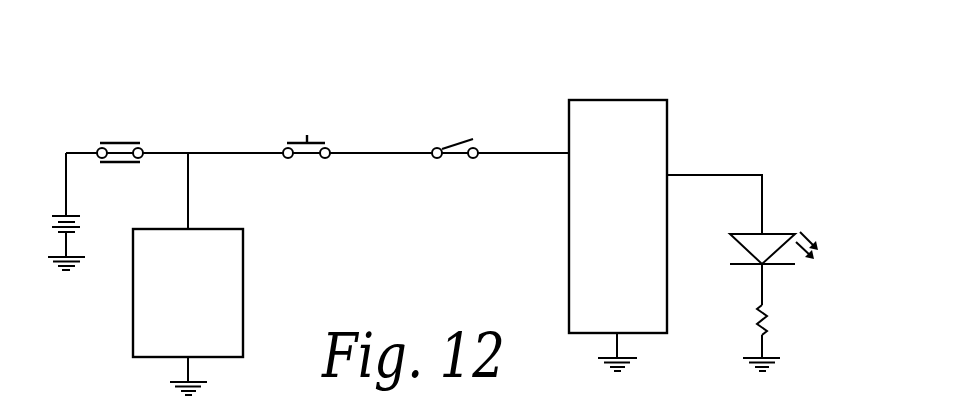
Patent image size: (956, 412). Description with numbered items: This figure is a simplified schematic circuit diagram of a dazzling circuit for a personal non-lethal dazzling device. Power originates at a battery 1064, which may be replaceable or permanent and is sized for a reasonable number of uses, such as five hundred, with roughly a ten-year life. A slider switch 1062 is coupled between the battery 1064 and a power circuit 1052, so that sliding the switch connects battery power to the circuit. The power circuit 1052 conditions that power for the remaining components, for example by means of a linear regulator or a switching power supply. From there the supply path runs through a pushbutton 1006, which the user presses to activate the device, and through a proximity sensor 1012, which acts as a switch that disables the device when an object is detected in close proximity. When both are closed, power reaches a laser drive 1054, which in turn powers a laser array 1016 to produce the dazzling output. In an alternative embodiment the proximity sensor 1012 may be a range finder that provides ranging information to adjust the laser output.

The slider switch 1062 is at (141, 144).
The battery 1064 is at (72, 215).
The pushbutton 1006 is at (292, 135).
The proximity sensor 1012 is at (436, 146).
The laser drive 1054 is at (587, 101).
The power circuit 1052 is at (243, 262).
The laser array 1016 is at (775, 238).